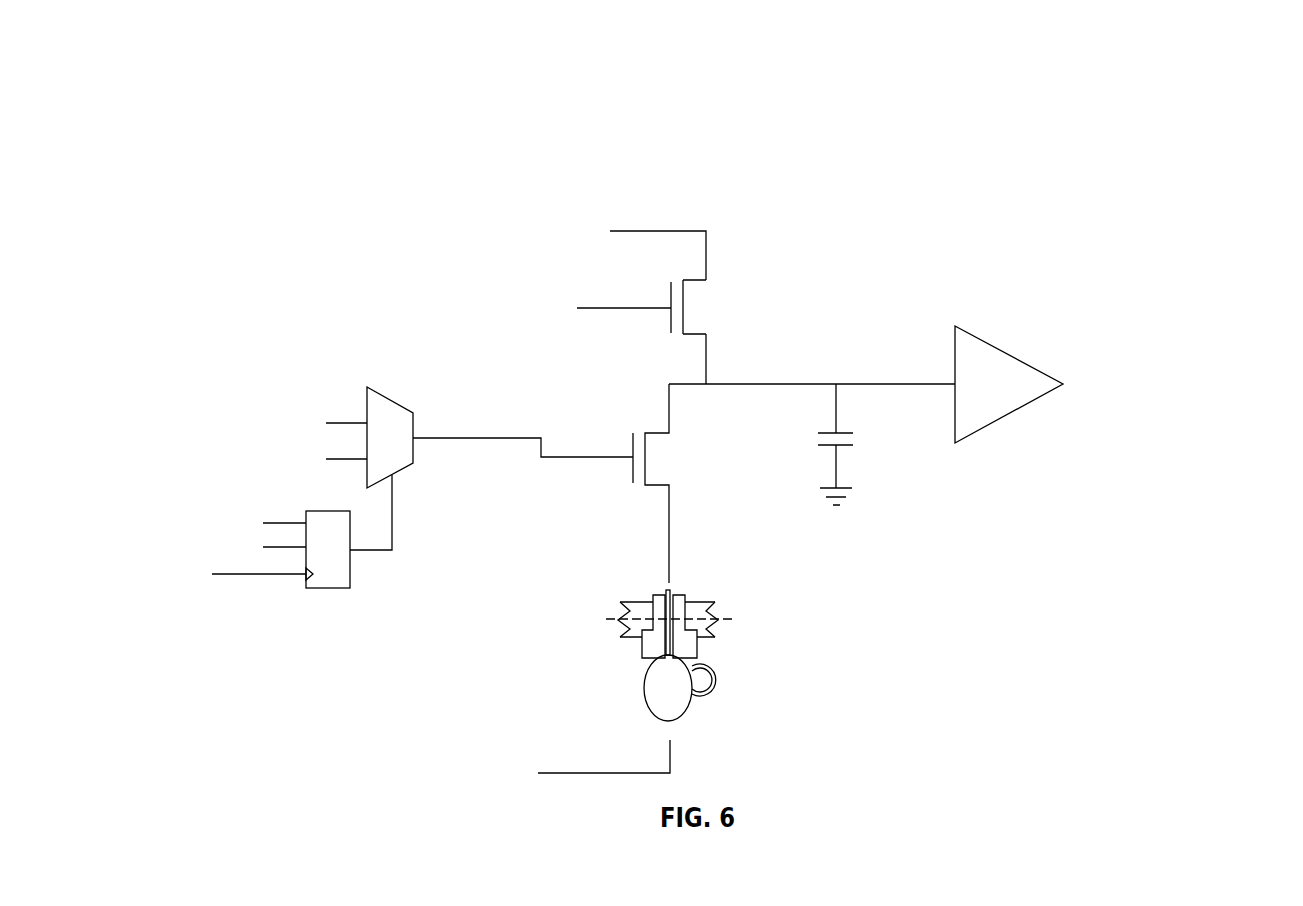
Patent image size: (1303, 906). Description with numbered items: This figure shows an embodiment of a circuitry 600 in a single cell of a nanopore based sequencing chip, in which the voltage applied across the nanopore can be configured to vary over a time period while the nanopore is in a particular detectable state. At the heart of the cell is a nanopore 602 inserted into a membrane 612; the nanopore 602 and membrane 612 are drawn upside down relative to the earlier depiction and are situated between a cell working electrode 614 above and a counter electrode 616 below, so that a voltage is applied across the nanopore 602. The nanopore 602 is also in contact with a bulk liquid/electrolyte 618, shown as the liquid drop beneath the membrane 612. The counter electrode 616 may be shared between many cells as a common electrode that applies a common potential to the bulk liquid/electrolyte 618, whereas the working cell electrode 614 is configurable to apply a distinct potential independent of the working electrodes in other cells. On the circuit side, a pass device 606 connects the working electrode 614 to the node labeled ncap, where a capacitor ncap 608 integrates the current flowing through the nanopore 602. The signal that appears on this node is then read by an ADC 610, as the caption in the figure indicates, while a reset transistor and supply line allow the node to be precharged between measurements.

The circuitry 600 is at (428, 64).
The nanopore 602 is at (708, 645).
The pass device 606 is at (665, 472).
The capacitor ncap 608 is at (847, 432).
The ADC 610 is at (1148, 424).
The membrane 612 is at (708, 607).
The working cell electrode 614 is at (548, 601).
The counter electrode 616 is at (512, 799).
The bulk liquid/electrolyte 618 is at (575, 716).